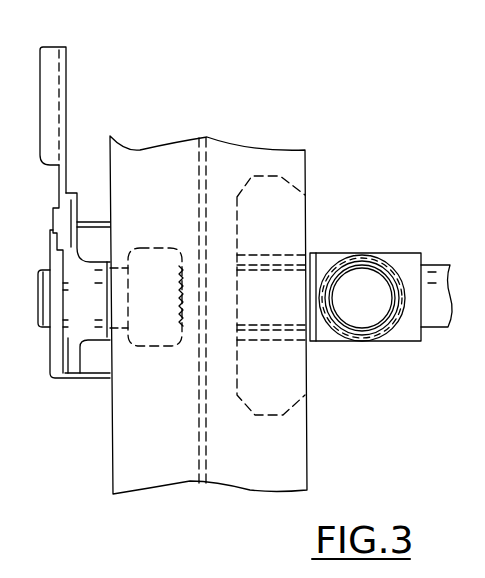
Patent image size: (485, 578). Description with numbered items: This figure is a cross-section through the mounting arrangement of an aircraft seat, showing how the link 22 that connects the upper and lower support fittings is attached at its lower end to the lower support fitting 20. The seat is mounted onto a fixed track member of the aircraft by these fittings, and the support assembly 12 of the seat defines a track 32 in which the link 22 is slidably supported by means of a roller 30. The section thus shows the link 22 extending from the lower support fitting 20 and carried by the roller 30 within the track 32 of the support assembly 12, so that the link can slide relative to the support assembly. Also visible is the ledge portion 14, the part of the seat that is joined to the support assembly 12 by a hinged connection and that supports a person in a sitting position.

The support assembly 12 is at (334, 116).
The ledge portion 14 is at (439, 234).
The lower support fitting 20 is at (53, 378).
The link 22 is at (66, 58).
The roller 30 is at (153, 337).
The track 32 is at (141, 178).